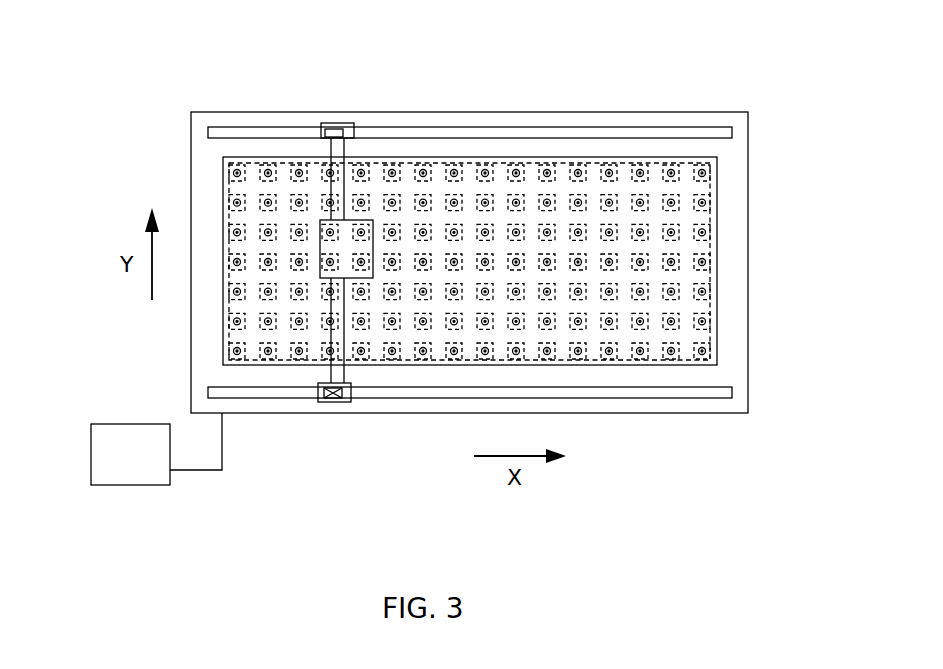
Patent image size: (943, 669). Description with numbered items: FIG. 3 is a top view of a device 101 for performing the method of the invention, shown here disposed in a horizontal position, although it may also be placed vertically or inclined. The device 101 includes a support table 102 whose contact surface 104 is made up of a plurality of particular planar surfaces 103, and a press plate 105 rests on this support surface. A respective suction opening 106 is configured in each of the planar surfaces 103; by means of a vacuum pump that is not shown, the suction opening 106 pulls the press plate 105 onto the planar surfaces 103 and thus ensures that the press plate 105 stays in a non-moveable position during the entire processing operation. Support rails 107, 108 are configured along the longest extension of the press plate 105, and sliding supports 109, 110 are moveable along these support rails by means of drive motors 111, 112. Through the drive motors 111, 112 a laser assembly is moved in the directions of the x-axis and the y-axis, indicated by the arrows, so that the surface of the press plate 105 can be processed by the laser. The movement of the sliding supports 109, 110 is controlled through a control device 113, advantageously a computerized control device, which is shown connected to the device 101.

The device 101 is at (582, 79).
The support table 102 is at (733, 350).
The planar surfaces 103 is at (698, 178).
The contact surface 104 is at (708, 240).
The press plate 105 is at (570, 366).
The suction opening 106 is at (676, 355).
The support rail 107 is at (368, 403).
The support rail 108 is at (419, 127).
The sliding support 109 is at (345, 402).
The sliding support 110 is at (347, 123).
The drive motor 111 is at (338, 123).
The drive motor 112 is at (332, 232).
The control device 113 is at (90, 466).